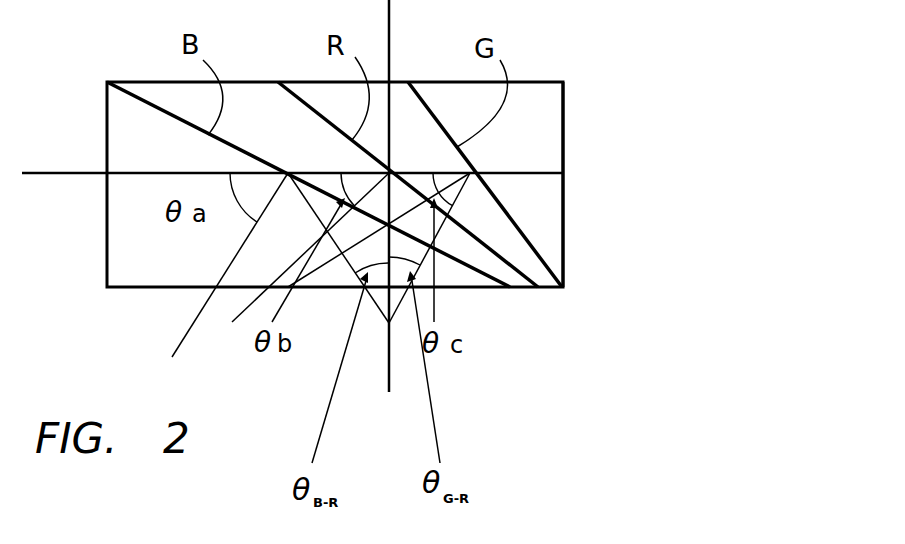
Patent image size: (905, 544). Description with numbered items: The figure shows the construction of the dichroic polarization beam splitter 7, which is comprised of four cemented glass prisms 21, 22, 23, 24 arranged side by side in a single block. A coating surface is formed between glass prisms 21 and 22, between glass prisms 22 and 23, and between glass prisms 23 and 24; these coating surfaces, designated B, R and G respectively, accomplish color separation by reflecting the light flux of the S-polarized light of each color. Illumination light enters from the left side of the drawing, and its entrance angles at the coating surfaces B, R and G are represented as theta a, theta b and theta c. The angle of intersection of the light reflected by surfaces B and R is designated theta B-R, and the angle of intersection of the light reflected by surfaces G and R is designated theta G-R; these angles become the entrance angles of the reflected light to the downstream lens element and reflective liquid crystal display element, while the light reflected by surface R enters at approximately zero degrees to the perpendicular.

The glass prism 21 is at (118, 114).
The glass prism 22 is at (167, 97).
The glass prism 23 is at (320, 97).
The glass prism 24 is at (448, 107).
The dichroic polarization beam splitter 7 is at (566, 178).